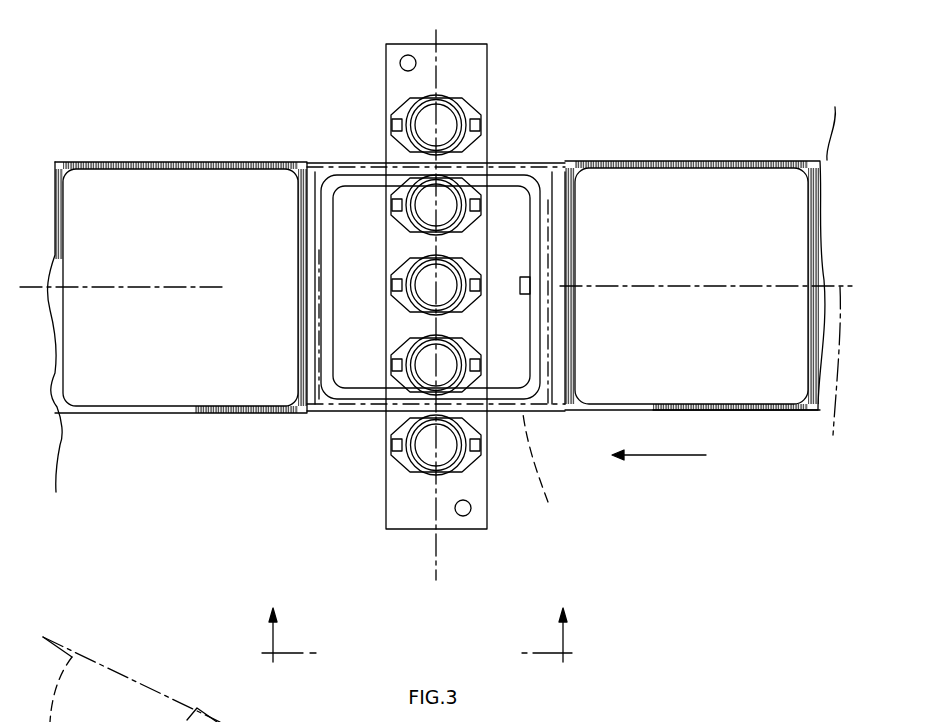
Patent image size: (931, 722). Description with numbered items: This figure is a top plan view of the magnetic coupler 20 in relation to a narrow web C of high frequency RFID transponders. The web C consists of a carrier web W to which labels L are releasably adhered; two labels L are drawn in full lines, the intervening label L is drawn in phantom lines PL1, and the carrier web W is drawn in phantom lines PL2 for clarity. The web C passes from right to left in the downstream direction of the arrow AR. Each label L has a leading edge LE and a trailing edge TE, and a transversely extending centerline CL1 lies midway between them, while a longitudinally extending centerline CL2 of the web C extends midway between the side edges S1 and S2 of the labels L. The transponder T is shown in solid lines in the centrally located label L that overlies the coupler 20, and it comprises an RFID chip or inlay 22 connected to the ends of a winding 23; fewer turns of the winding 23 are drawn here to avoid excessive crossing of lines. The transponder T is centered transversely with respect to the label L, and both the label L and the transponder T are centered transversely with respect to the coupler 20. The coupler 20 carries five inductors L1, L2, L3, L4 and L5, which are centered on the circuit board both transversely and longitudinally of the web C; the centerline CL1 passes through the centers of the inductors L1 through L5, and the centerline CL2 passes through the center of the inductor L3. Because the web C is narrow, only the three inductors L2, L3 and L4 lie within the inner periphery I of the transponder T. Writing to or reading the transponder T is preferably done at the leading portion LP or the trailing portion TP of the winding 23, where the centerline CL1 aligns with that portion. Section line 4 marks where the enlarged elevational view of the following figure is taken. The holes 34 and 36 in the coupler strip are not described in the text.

The magnetic coupler 20 is at (362, 514).
The RFID chip or inlay 22 is at (526, 276).
The winding 23 is at (531, 285).
The pilot hole 34 is at (464, 516).
The pilot hole 36 is at (402, 58).
The section line 4- 4 is at (417, 621).
The inductor L1 is at (467, 470).
The inductor L2 is at (394, 392).
The inductor L3 is at (394, 308).
The inductor L4 is at (388, 182).
The inductor L5 is at (466, 96).
The web C is at (108, 155).
The label L is at (177, 190).
The carrier web W is at (295, 165).
The transponder T is at (513, 166).
The trailing portion TP is at (574, 182).
The leading portion LP is at (340, 256).
The phantom lines PL1 is at (555, 413).
The phantom lines PL2 is at (327, 160).
The transversely extending centerline CL1 is at (440, 56).
The longitudinally extending centerline CL2 is at (133, 288).
The leading edge LE is at (52, 334).
The trailing edge TE is at (807, 203).
The side edge S1 is at (763, 414).
The side edge S2 is at (742, 166).
The inner periphery I is at (528, 333).
The arrow AR is at (706, 458).